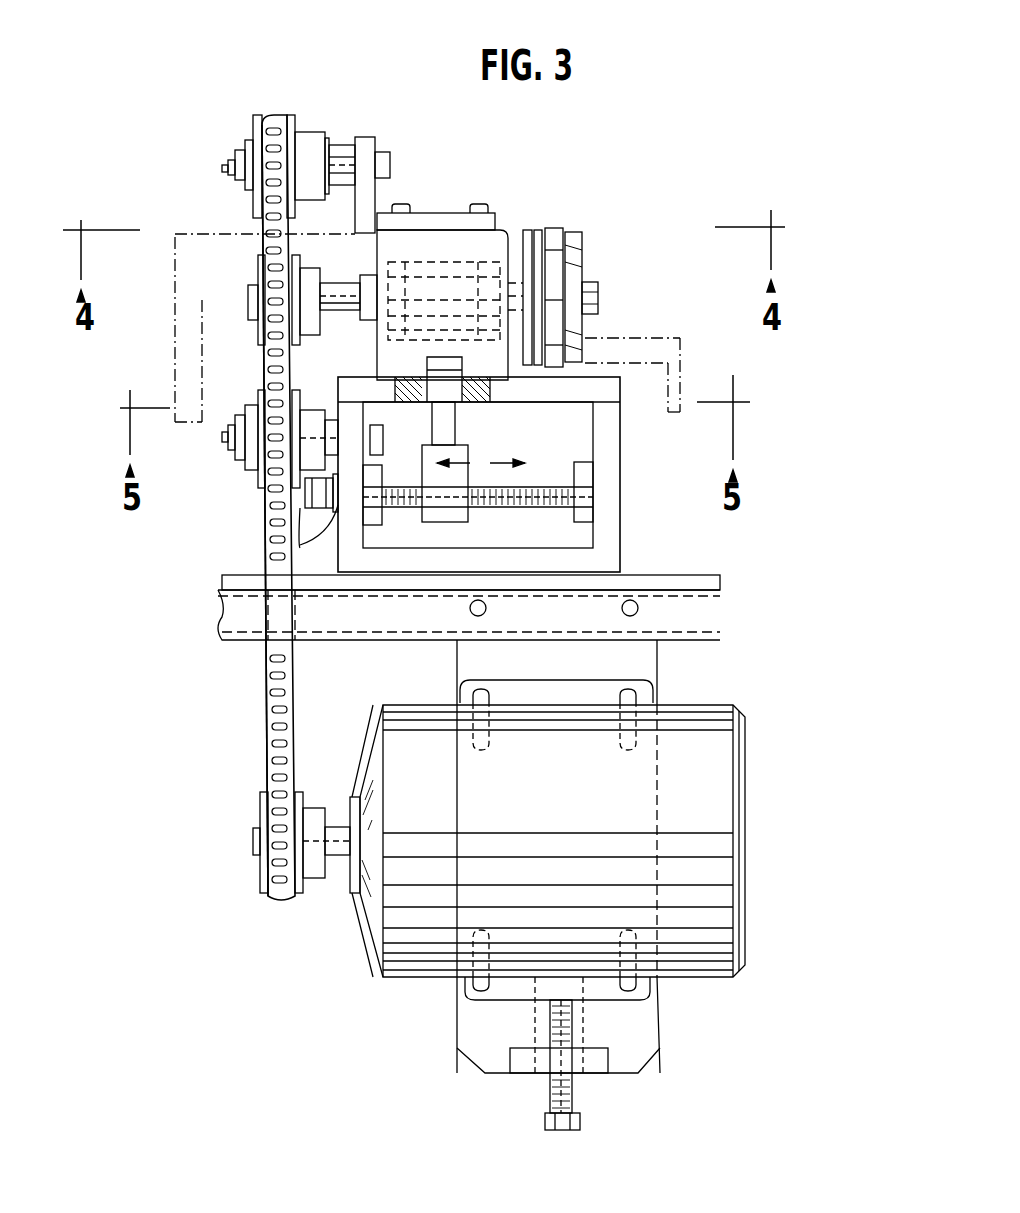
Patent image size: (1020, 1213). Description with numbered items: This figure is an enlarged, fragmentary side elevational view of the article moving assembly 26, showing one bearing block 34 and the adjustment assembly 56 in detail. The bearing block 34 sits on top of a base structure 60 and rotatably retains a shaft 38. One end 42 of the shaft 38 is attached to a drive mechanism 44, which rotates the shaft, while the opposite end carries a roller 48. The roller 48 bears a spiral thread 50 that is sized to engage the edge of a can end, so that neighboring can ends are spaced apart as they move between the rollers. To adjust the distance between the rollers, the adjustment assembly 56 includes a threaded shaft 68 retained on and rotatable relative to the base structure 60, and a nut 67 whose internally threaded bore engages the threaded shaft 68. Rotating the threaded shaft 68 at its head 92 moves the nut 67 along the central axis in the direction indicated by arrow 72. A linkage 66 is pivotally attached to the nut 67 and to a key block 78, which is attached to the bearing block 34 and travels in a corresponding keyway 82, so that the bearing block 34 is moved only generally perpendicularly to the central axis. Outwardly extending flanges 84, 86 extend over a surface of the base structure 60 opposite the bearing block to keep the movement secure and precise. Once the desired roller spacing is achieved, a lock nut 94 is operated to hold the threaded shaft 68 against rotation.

The article moving assembly 26 is at (487, 178).
The bearing block 34 is at (437, 242).
The shaft 38 is at (300, 268).
The end of shaft 42 is at (262, 265).
The drive mechanism 44 is at (720, 878).
The roller 48 is at (550, 228).
The spiral thread 50 is at (570, 232).
The adjustment assembly 56 is at (626, 501).
The base structure 60 is at (588, 388).
The linkage 66 is at (455, 430).
The nut 67 is at (445, 512).
The threaded shaft 68 is at (535, 507).
The arrow 72 is at (525, 463).
The key block 78 is at (340, 365).
The keyway 82 is at (437, 362).
The outwardly extending flange 84 is at (415, 412).
The outwardly extending flange 86 is at (465, 410).
The head 92 is at (310, 525).
The lock nut 94 is at (300, 548).